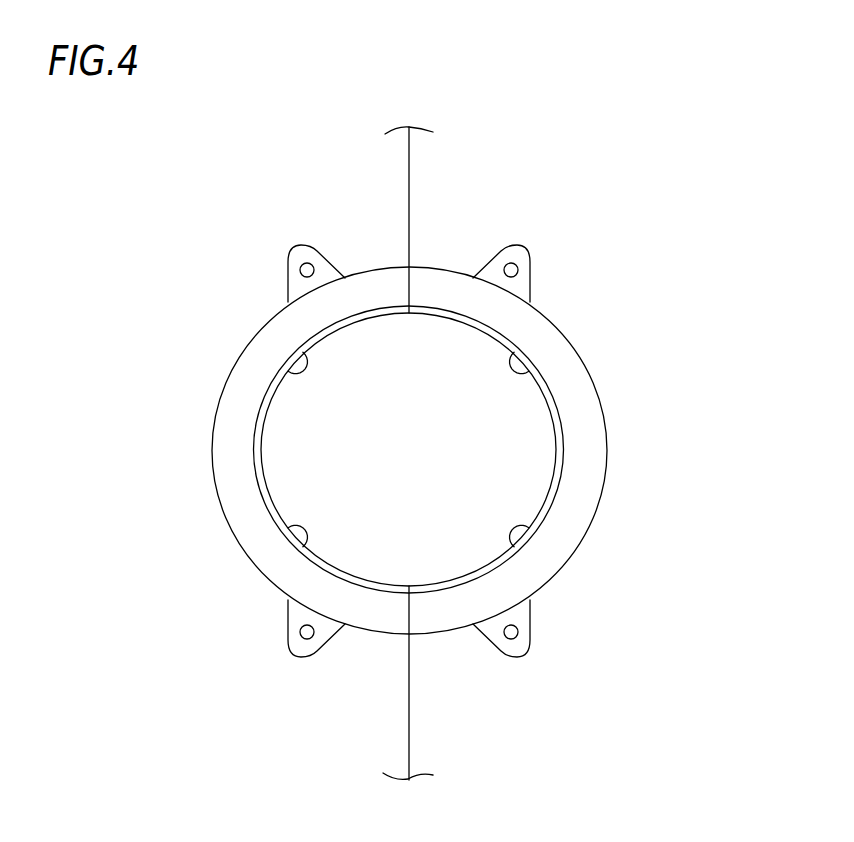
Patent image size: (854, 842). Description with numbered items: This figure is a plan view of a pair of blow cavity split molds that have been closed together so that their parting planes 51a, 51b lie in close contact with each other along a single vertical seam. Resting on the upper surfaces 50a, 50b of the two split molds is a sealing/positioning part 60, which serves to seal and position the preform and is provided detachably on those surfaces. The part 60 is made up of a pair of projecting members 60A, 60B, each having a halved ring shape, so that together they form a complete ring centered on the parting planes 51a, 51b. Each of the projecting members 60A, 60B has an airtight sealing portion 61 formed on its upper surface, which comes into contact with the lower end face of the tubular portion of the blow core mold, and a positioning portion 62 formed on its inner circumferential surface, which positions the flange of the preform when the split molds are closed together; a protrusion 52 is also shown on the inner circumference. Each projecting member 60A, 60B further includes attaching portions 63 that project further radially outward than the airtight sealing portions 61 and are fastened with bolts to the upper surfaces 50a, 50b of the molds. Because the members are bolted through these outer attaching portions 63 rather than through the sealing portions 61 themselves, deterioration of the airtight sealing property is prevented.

The upper surface 50a is at (198, 198).
The upper surface 50b is at (655, 198).
The parting plane 51a is at (402, 189).
The parting plane 51b is at (402, 190).
The inner protrusion 52 is at (288, 376).
The sealing/positioning part 60 is at (408, 463).
The projecting member 60A is at (193, 450).
The projecting member 60B is at (622, 458).
The airtight sealing portion 61 is at (240, 509).
The positioning portion 62 is at (278, 532).
The attaching portion 63 is at (287, 275).